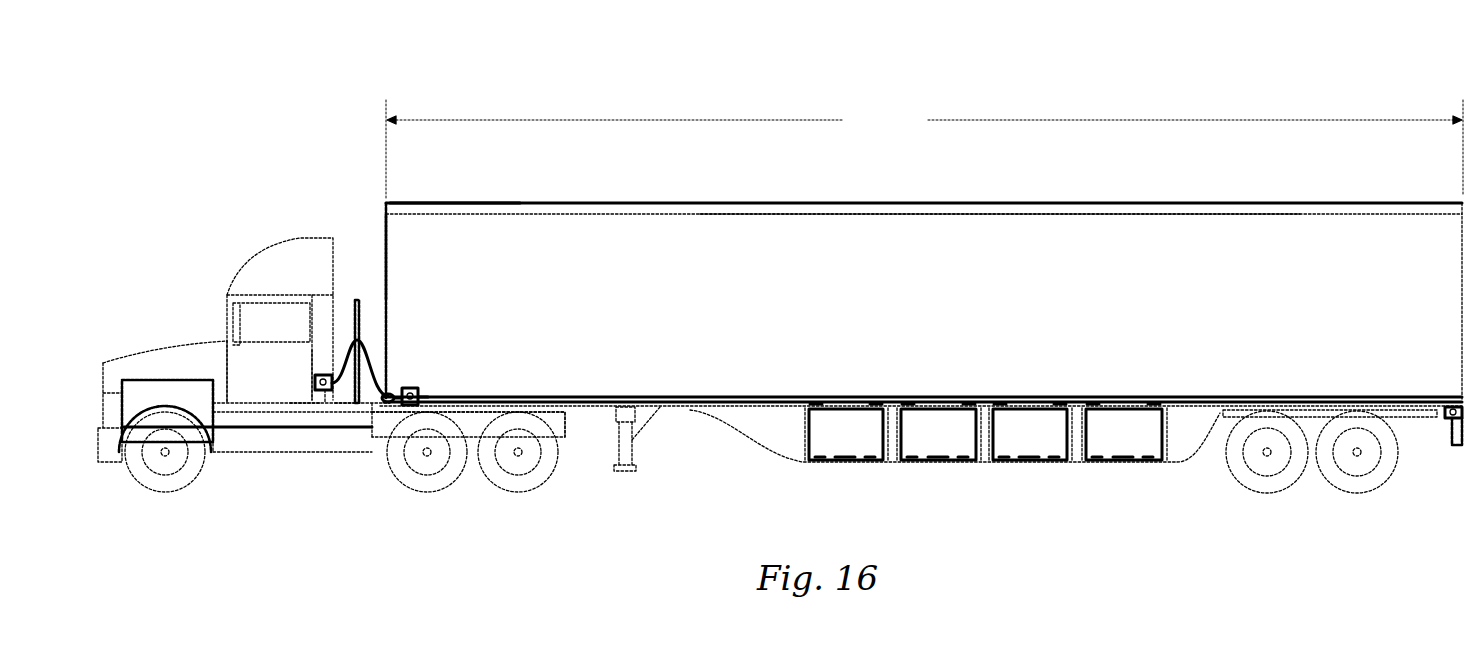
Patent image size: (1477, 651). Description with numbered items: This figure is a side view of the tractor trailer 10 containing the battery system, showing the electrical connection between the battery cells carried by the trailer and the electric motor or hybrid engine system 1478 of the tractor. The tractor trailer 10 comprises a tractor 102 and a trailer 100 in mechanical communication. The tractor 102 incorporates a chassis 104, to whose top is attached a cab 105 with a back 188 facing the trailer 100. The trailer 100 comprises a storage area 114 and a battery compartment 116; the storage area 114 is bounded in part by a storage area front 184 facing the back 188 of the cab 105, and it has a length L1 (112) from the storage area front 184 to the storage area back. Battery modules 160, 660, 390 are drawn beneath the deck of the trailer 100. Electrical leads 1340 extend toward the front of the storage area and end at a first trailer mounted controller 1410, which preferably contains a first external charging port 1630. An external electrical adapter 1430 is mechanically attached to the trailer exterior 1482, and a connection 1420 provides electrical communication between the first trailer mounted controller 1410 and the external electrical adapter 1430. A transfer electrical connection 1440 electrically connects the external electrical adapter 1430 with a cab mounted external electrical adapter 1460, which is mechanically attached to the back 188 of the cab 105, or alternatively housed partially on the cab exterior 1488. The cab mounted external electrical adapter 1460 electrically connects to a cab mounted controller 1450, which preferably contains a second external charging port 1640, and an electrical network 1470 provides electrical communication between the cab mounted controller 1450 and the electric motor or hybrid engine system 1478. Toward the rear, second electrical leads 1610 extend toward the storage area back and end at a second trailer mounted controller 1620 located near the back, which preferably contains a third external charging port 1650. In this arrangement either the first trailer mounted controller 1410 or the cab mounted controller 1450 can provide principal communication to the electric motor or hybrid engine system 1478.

The tractor trailer 10 is at (627, 98).
The length L1 112 is at (924, 149).
The trailer 100 is at (1050, 220).
The storage area 114 is at (1158, 218).
The trailer exterior 1482 is at (405, 228).
The storage area front 184 is at (385, 223).
The second electrical leads 1610 is at (1332, 397).
The battery compartment 116 is at (1187, 422).
The second trailer mounted controller 1620 is at (1430, 423).
The third external charging port 1650 is at (1457, 437).
The electrical leads 1340 is at (645, 407).
The container 660 is at (825, 421).
The container 390 is at (870, 423).
The battery module 160 is at (958, 430).
The tractor 102 is at (242, 278).
The cab 105 is at (275, 258).
The back of the cab 188 is at (333, 237).
The electric motor or hybrid engine system 1478 is at (167, 380).
The chassis 104 is at (565, 423).
The cab exterior 1488 is at (315, 352).
The cab mounted controller 1450 is at (318, 390).
The second external charging port 1640 is at (326, 400).
The electrical network 1470 is at (297, 405).
The cab mounted external electrical adapter 1460 is at (345, 400).
The transfer electrical connection 1440 is at (357, 340).
The external electrical adapter 1430 is at (386, 403).
The connection 1420 is at (396, 394).
The first trailer mounted controller 1410 is at (415, 388).
The first external charging port 1630 is at (422, 398).